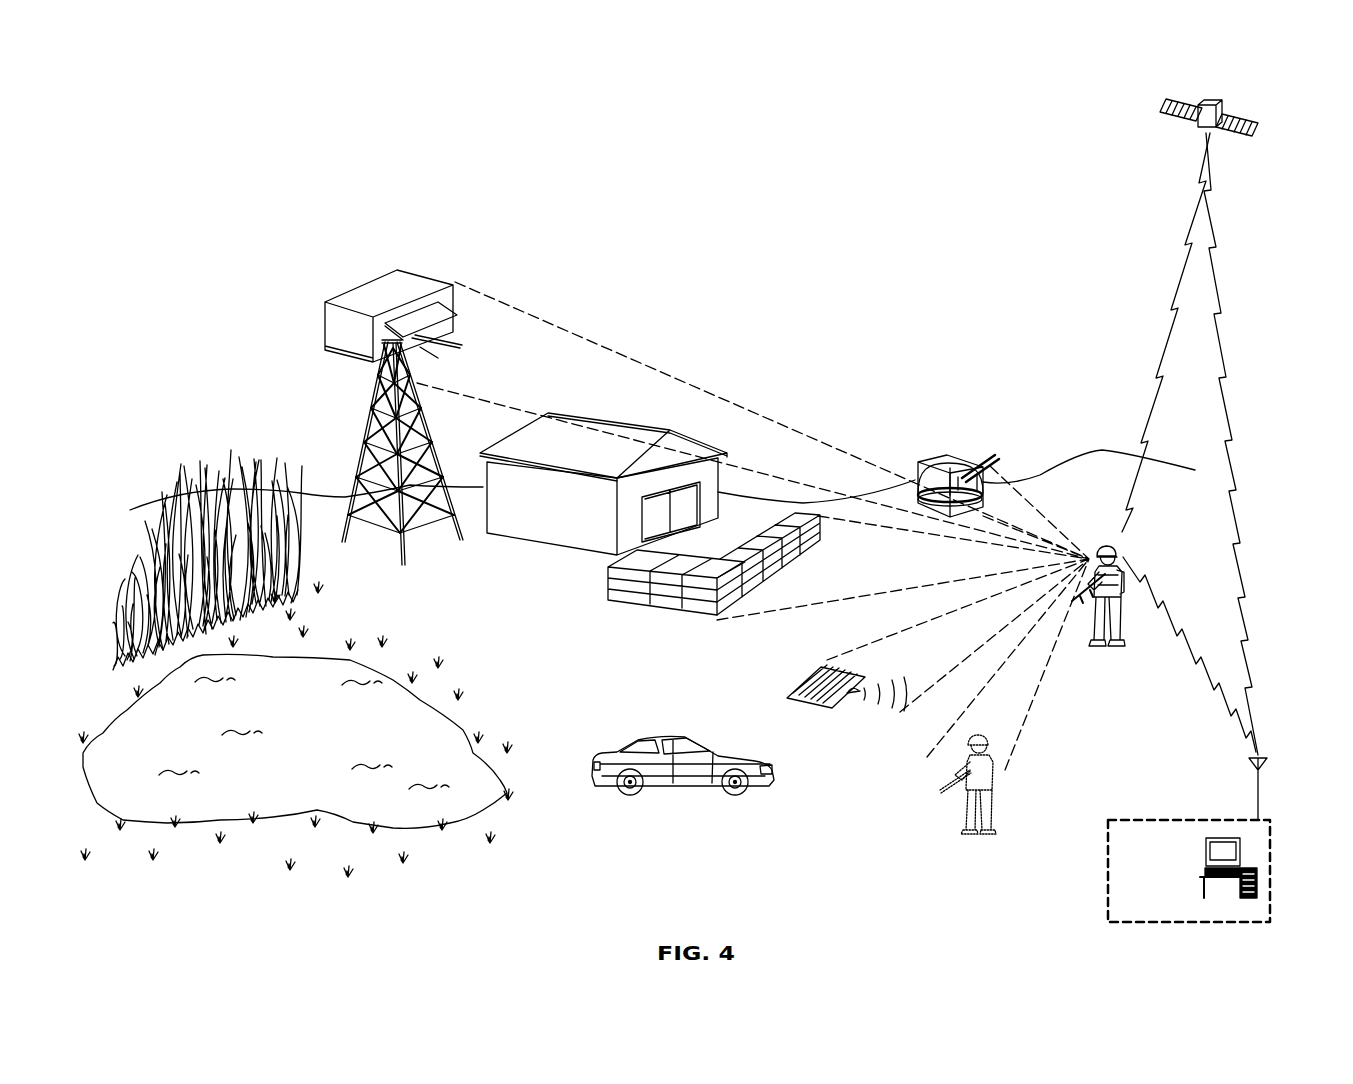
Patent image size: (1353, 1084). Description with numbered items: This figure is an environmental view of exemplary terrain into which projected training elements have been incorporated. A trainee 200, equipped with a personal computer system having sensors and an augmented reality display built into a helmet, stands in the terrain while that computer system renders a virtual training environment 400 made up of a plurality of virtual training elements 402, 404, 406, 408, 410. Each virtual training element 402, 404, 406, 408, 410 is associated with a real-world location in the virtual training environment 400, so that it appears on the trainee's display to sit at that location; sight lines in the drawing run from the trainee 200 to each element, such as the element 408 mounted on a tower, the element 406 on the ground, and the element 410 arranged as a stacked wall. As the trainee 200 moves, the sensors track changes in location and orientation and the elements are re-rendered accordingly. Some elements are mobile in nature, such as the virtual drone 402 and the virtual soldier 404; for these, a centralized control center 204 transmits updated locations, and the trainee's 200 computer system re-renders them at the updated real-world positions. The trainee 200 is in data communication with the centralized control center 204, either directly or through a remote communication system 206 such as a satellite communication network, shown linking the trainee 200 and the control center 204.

The trainee 200 is at (1117, 549).
The centralized control center 204 is at (1262, 830).
The remote communication system 206 is at (1162, 106).
The virtual training environment 400 is at (1003, 394).
The virtual drone 402 is at (836, 707).
The virtual soldier 404 is at (972, 793).
The virtual training element 406 is at (932, 462).
The virtual training element 408 is at (325, 325).
The virtual training element 410 is at (618, 570).